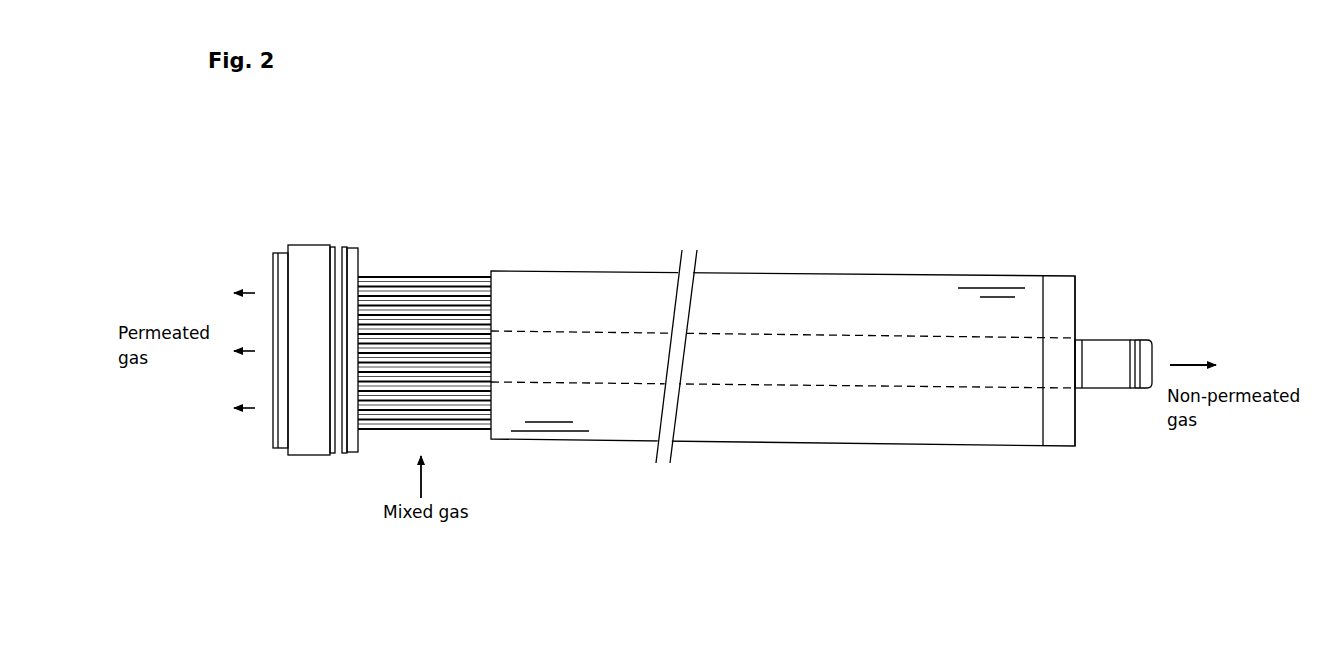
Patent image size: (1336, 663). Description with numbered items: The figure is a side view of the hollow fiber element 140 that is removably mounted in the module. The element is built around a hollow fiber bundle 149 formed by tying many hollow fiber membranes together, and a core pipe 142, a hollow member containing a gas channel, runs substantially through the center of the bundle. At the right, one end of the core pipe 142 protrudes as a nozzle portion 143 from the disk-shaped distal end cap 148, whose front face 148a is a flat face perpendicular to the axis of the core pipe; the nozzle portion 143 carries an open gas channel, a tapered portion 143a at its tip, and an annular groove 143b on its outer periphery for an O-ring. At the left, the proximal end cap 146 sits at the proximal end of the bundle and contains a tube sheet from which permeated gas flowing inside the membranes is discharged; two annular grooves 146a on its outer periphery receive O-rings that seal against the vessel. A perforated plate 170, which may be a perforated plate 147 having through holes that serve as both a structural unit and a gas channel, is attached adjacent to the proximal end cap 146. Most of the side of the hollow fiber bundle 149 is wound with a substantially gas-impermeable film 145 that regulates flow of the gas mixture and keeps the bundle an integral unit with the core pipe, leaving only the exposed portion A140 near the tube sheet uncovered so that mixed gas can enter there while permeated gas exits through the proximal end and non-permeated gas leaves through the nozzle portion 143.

The hollow fiber element 140 is at (1010, 205).
The perforated plate 170 is at (239, 312).
The perforated plate 147 is at (283, 248).
The proximal end cap 146 is at (315, 246).
The annular grooves 146a is at (345, 456).
The hollow fiber bundle 149 is at (440, 400).
The exposed portion A140 is at (482, 262).
The gas-impermeable film 145 is at (755, 294).
The core pipe 142 is at (843, 360).
The distal end cap 148 is at (1057, 285).
The front face 148a is at (1078, 428).
The nozzle portion 143 is at (1148, 324).
The tapered portion 143a is at (1150, 340).
The annular groove 143b is at (1128, 390).